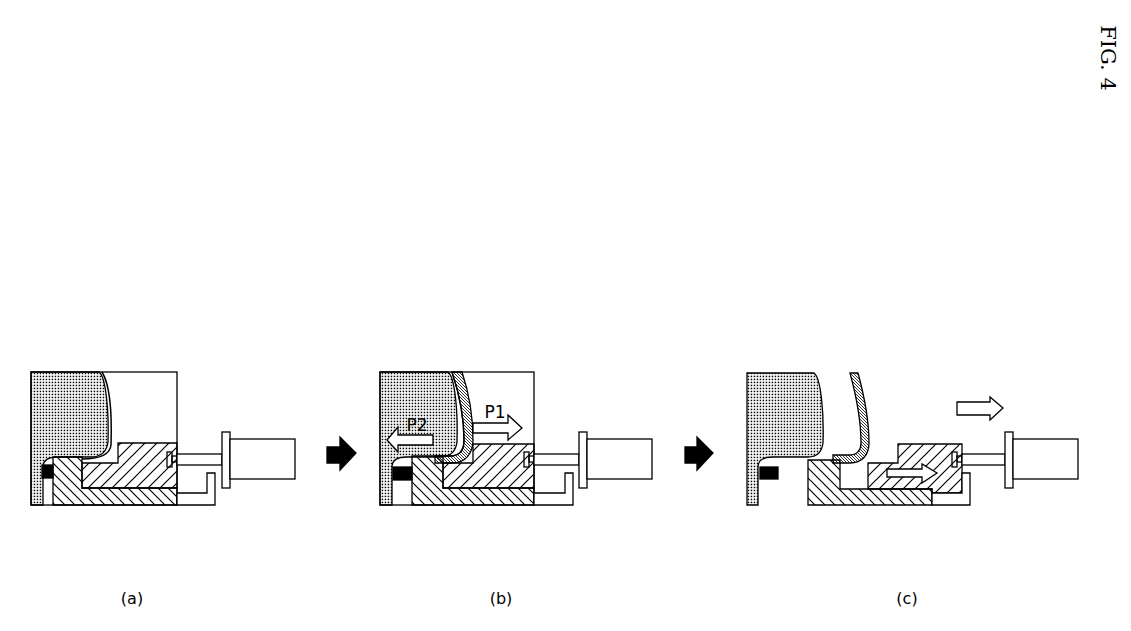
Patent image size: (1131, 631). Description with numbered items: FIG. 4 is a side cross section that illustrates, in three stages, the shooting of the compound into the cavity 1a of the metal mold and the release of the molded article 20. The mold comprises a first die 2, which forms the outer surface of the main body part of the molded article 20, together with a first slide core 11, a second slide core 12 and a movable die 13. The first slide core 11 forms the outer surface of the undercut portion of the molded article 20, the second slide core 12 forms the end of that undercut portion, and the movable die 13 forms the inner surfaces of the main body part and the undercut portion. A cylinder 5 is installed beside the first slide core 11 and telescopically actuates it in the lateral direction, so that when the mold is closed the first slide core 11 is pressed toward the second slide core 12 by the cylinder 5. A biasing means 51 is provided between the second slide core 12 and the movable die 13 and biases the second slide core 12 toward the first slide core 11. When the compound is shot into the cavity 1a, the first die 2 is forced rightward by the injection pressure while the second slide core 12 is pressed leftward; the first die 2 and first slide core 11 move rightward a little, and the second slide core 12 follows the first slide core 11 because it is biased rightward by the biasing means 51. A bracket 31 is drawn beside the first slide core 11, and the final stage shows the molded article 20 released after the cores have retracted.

The cavity 1a is at (100, 372).
The first die 2 is at (167, 388).
The cylinder 5 is at (258, 439).
The first slide core 11 is at (125, 490).
The second slide core 12 is at (80, 506).
The movable die 13 is at (60, 377).
The molded article 20 is at (468, 405).
The stopper 31 is at (212, 506).
The biasing means 51 is at (47, 480).